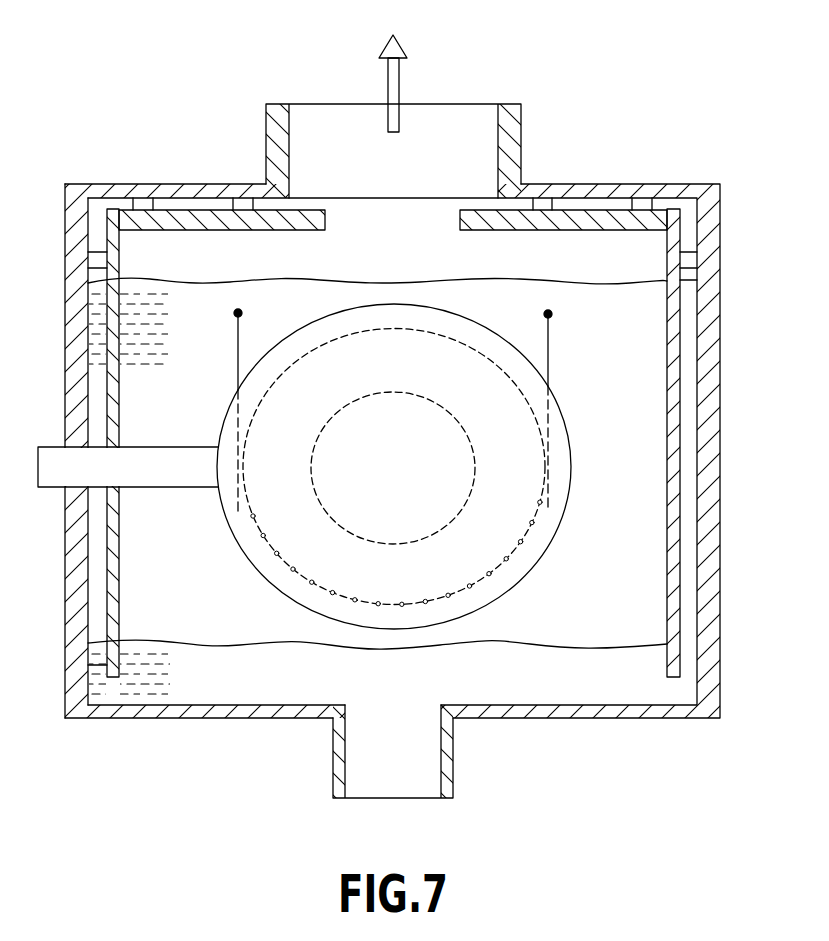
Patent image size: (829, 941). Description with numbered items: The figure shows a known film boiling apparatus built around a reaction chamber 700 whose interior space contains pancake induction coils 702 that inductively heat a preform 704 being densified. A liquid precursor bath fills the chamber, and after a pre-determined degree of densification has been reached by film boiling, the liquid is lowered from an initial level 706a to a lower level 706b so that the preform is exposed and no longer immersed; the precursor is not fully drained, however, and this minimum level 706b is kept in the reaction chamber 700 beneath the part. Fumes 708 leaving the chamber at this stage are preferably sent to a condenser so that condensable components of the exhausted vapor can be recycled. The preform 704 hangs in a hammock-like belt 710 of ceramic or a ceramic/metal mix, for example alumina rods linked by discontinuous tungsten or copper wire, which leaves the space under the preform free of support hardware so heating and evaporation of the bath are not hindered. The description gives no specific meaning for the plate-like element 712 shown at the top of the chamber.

The reaction chamber 700 is at (681, 137).
The pancake induction coils 702 is at (523, 581).
The preform 704 is at (507, 490).
The level of the liquid precursor 706a is at (388, 281).
The minimum level 706b is at (194, 642).
The fumes 708 is at (396, 73).
The belt 710 is at (549, 345).
The top plate 712 is at (204, 235).